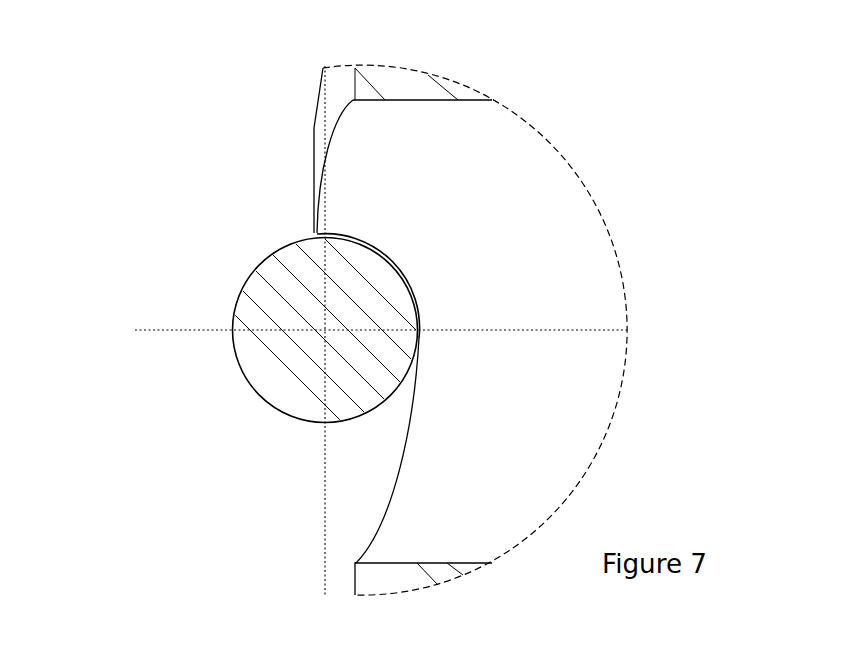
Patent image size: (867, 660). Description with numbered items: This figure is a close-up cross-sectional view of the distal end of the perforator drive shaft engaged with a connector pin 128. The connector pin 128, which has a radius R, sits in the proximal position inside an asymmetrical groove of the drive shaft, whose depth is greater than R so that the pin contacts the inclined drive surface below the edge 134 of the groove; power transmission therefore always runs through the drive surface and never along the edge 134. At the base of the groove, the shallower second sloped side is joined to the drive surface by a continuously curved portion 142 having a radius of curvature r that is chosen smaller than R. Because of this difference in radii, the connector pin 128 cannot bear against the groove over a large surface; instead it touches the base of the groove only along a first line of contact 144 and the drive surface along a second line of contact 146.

The connector pin 128 is at (292, 368).
The edge of the groove 134 is at (313, 233).
The continuously curved portion 142 is at (411, 270).
The first line of contact 144 is at (420, 331).
The second line of contact 146 is at (336, 238).